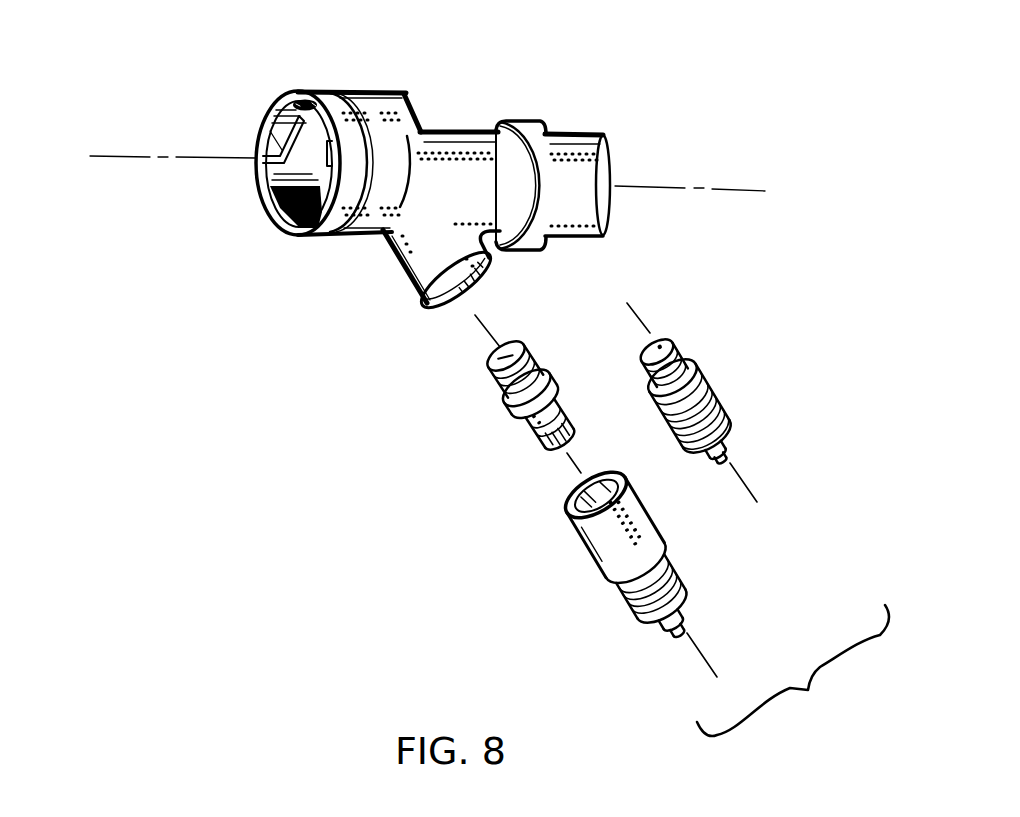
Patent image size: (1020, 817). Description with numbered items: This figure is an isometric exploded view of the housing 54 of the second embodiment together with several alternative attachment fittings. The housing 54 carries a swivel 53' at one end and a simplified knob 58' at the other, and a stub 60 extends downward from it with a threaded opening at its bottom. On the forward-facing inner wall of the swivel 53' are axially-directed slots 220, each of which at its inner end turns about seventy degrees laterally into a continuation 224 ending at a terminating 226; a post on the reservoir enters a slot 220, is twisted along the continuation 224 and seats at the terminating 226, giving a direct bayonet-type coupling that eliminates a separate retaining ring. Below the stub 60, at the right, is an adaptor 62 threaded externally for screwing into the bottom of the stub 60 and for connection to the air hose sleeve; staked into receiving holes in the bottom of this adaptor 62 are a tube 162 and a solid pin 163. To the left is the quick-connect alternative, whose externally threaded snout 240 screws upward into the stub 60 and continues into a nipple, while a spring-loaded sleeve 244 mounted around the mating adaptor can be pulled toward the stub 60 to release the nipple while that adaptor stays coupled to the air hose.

The slot 220 is at (258, 156).
The continuation 224 is at (266, 140).
The terminating 226 is at (310, 100).
The swivel 53' is at (364, 137).
The housing 54 is at (489, 127).
The knob 58' is at (602, 177).
The stub 60 is at (397, 262).
The snout 240 is at (496, 412).
The sleeve 244 is at (578, 556).
The adaptor 62 is at (713, 381).
The tube 162 is at (738, 442).
The solid pin 163 is at (721, 466).